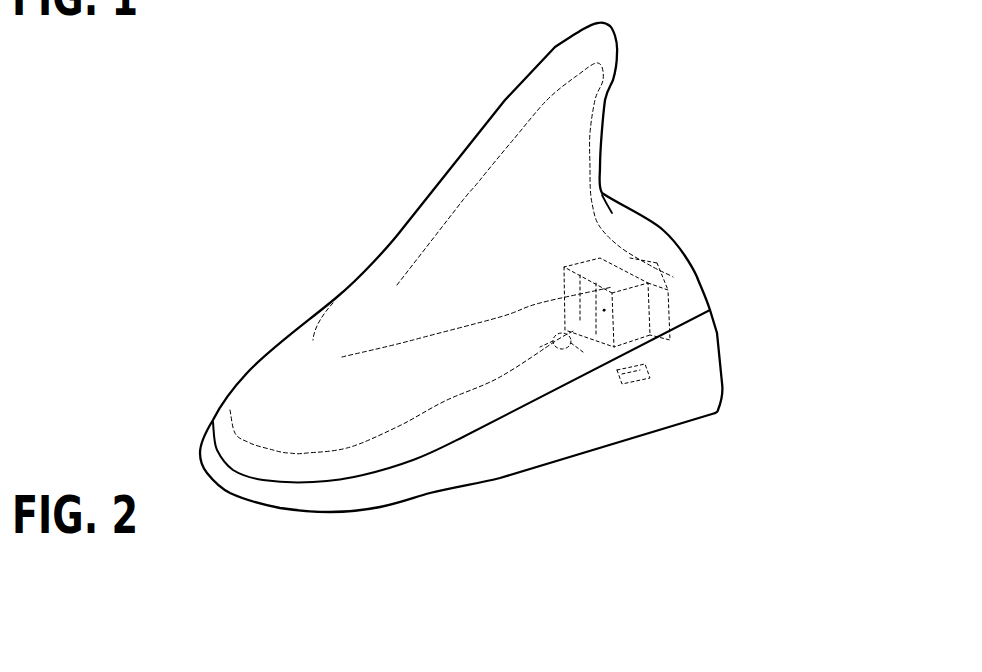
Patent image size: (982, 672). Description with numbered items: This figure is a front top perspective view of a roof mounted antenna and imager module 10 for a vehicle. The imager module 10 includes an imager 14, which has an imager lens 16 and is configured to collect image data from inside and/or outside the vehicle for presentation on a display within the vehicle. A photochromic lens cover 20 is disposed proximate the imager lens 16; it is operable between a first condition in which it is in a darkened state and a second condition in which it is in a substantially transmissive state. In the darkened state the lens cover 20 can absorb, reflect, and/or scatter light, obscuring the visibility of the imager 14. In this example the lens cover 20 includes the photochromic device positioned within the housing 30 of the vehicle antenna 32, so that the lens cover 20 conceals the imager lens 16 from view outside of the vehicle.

The imager module 10 is at (698, 195).
The imager 14 is at (643, 353).
The imager lens 16 is at (667, 298).
The photochromic lens cover 20 is at (688, 274).
The housing 30 is at (365, 307).
The vehicle antenna 32 is at (605, 103).